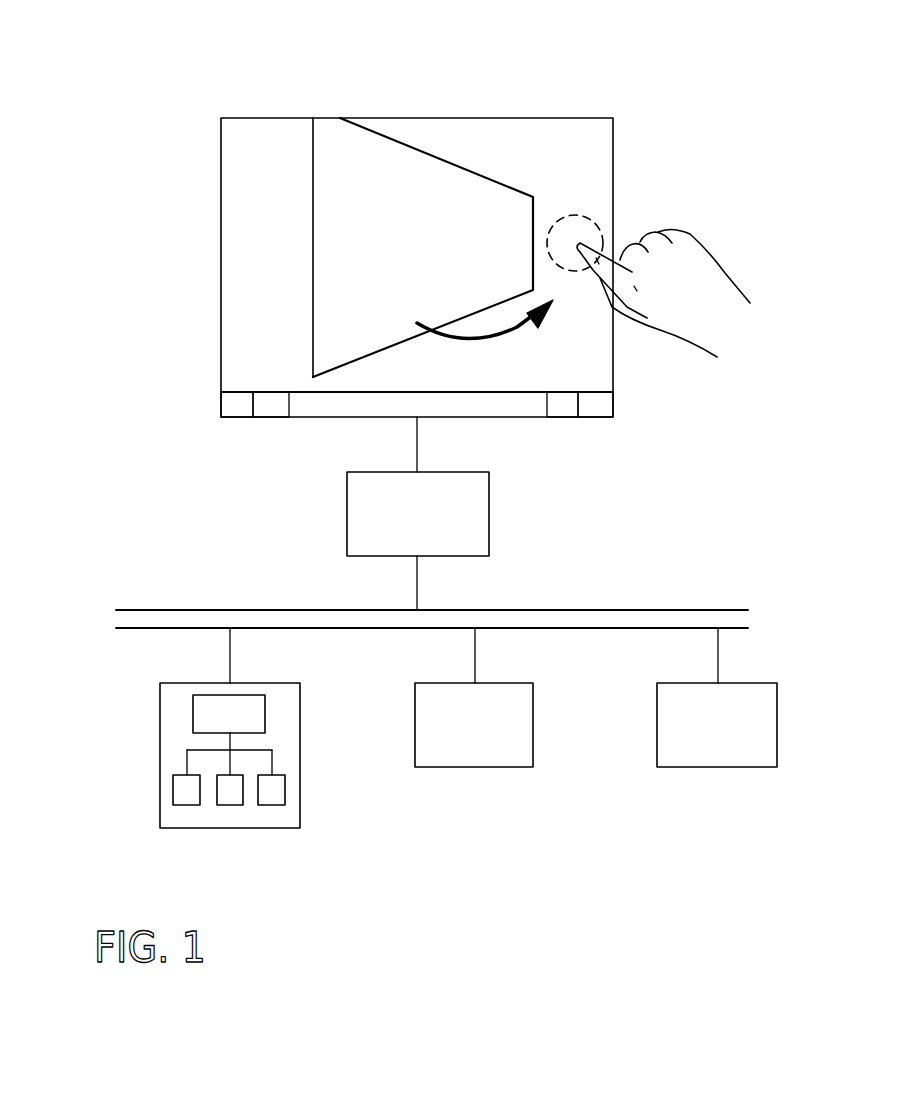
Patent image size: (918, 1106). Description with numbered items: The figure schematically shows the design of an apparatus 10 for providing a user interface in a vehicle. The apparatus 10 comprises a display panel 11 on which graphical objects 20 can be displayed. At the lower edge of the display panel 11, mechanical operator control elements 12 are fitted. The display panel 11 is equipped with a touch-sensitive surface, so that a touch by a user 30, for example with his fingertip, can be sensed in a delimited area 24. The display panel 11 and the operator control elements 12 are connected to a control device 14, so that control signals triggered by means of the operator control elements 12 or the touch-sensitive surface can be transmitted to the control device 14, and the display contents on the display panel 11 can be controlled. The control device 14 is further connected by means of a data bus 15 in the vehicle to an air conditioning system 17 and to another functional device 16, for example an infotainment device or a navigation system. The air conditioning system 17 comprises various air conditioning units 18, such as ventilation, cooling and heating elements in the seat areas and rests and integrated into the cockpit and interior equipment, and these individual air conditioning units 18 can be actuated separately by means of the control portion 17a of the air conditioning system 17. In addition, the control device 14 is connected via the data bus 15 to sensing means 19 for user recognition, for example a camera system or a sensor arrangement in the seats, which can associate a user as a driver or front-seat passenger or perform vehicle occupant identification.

The apparatus 10 is at (660, 89).
The display panel 11 is at (586, 166).
The mechanical operator control elements 12 is at (266, 405).
The control device 14 is at (467, 521).
The data bus 15 is at (683, 611).
The functional device 16 is at (487, 753).
The air conditioning system 17 is at (172, 720).
The control portion 17a is at (250, 715).
The air conditioning units 18 is at (270, 794).
The sensing means for user recognition 19 is at (720, 753).
The graphical objects 20 is at (392, 180).
The delimited area 24 is at (586, 229).
The user 30 is at (670, 310).